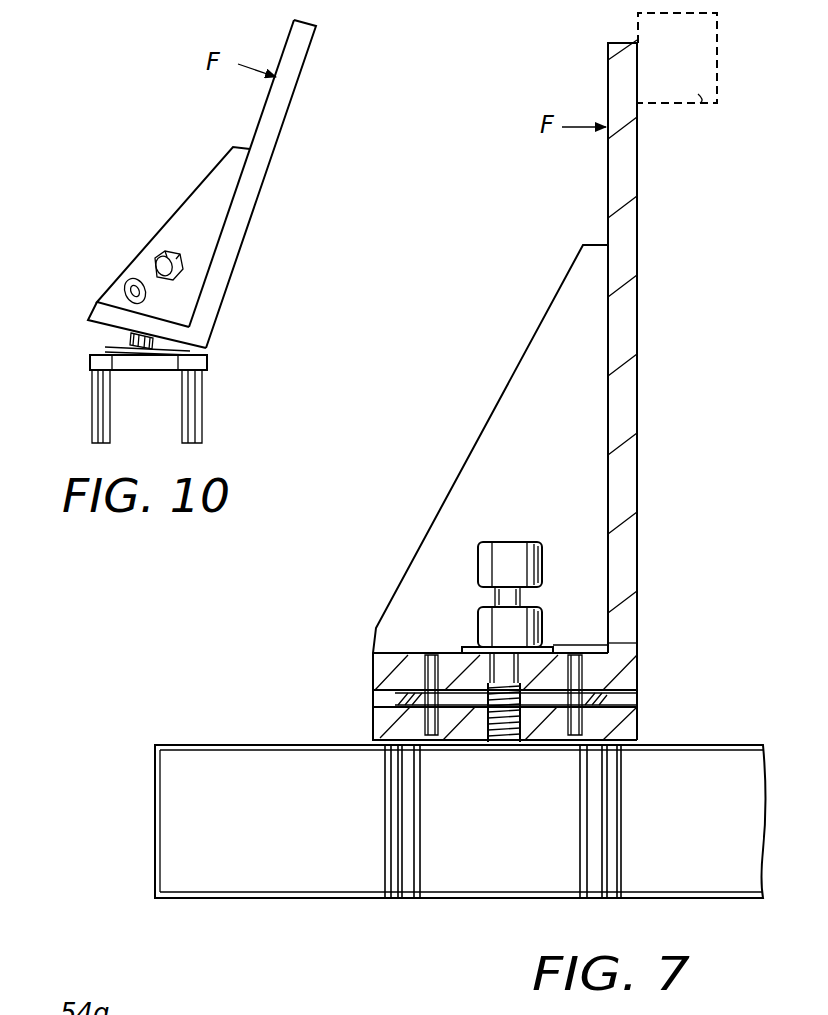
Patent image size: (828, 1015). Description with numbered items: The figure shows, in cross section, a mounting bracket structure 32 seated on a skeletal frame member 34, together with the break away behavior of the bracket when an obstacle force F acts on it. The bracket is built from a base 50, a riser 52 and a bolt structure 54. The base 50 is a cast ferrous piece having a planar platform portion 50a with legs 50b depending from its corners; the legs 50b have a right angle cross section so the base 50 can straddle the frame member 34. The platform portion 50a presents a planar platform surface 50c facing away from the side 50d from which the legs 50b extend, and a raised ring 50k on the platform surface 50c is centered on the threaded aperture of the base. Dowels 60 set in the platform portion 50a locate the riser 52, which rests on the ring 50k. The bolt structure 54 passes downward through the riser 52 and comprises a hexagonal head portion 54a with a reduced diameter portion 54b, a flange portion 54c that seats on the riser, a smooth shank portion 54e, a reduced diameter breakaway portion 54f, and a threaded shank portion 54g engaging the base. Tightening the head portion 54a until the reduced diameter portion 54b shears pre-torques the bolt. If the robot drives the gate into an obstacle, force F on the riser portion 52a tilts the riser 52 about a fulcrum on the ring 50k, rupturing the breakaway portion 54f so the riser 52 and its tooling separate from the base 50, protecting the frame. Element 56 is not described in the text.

In FIG. 7, the mounting bracket structure 32 is at (692, 410).
In FIG. 7, the frame member 34 is at (303, 888).
In FIG. 10, the base 50 is at (214, 395).
In FIG. 7, the base 50 is at (650, 710).
In FIG. 7, the platform portion 50a is at (640, 724).
In FIG. 7, the legs 50b is at (384, 862).
In FIG. 7, the platform surface 50c is at (377, 698).
In FIG. 7, the side 50d is at (549, 750).
In FIG. 10, the raised ring 50k is at (100, 340).
In FIG. 10, the riser 52 is at (158, 195).
In FIG. 7, the riser 52 is at (540, 302).
In FIG. 10, the riser portion 52a is at (279, 151).
In FIG. 7, the bolt structure 54 is at (465, 545).
In FIG. 7, the hexagonal head portion 54a is at (482, 540).
In FIG. 7, the reduced diameter portion 54b is at (478, 587).
In FIG. 7, the flange portion 54c is at (552, 645).
In FIG. 7, the smooth shank portion 54e is at (608, 643).
In FIG. 7, the reduced diameter breakaway portion 54f is at (522, 683).
In FIG. 7, the threaded shank portion 54g is at (507, 745).
In FIG. 7, the wall top portion 56 is at (700, 103).
In FIG. 7, the dowels 60 is at (408, 738).